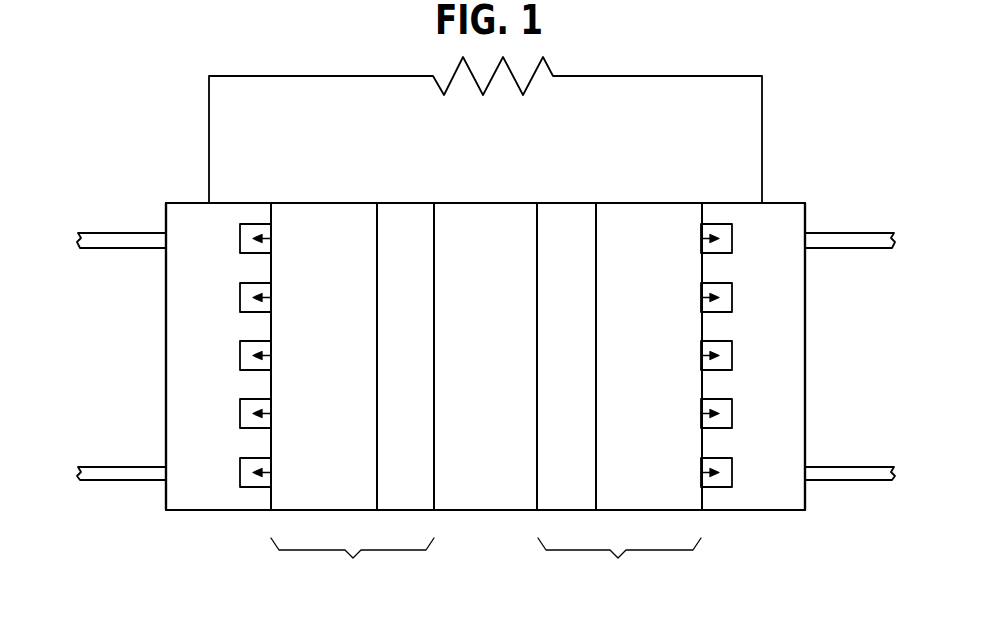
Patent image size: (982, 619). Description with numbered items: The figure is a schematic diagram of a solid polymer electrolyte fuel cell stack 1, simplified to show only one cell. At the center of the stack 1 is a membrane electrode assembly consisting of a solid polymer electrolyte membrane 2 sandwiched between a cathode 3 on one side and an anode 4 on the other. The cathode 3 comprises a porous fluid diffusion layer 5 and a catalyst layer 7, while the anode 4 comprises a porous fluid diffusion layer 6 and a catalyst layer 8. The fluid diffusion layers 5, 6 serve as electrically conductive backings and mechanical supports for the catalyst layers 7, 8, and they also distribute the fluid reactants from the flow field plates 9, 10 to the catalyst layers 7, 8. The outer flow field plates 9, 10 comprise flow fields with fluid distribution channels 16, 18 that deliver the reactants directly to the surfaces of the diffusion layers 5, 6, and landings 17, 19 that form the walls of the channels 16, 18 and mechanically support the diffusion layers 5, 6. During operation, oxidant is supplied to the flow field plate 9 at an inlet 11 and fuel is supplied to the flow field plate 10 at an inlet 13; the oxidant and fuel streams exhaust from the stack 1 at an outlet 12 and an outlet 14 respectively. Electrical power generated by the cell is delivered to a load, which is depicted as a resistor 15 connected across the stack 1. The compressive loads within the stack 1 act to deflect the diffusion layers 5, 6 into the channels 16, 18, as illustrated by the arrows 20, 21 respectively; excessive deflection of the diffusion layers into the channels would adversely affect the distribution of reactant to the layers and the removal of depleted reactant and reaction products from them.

The stack 1 is at (846, 93).
The solid polymer electrolyte membrane 2 is at (482, 491).
The cathode 3 is at (352, 561).
The anode 4 is at (619, 561).
The porous fluid diffusion layer 5 is at (350, 222).
The porous fluid diffusion layer 6 is at (623, 225).
The catalyst layer 7 is at (408, 222).
The catalyst layer 8 is at (563, 222).
The flow field plate 9 is at (202, 491).
The flow field plate 10 is at (773, 502).
The inlet 11 is at (123, 238).
The outlet 12 is at (122, 472).
The inlet 13 is at (857, 240).
The outlet 14 is at (848, 472).
The resistor 15 is at (531, 96).
The fluid distribution channels 16 is at (246, 298).
The landings 17 is at (263, 329).
The fluid distribution channels 18 is at (729, 324).
The landings 19 is at (686, 336).
The arrows 20 is at (265, 420).
The arrows 21 is at (684, 389).